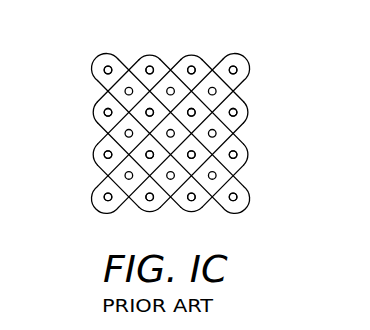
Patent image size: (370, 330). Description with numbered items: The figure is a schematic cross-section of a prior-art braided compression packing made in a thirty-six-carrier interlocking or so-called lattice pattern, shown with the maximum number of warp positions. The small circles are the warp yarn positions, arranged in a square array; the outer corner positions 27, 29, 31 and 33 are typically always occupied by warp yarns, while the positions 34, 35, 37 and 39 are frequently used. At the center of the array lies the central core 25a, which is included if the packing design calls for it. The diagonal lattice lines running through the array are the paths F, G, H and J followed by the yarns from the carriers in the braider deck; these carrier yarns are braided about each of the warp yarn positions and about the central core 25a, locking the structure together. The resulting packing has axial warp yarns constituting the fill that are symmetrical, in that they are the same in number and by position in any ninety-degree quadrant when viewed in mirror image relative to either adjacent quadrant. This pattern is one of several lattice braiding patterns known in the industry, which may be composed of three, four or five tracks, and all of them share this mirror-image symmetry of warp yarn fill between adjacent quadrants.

The carrier path F is at (93, 70).
The carrier path G is at (93, 112).
The carrier path H is at (93, 155).
The carrier path J is at (93, 197).
The warp yarn position 27 is at (110, 66).
The warp yarn position 34 is at (152, 109).
The central core 25a is at (193, 67).
The warp yarn position 29 is at (236, 68).
The warp yarn position 35 is at (196, 112).
The warp yarn position 37 is at (196, 155).
The warp yarn position 33 is at (104, 200).
The warp yarn position 39 is at (147, 200).
The warp yarn position 31 is at (237, 200).